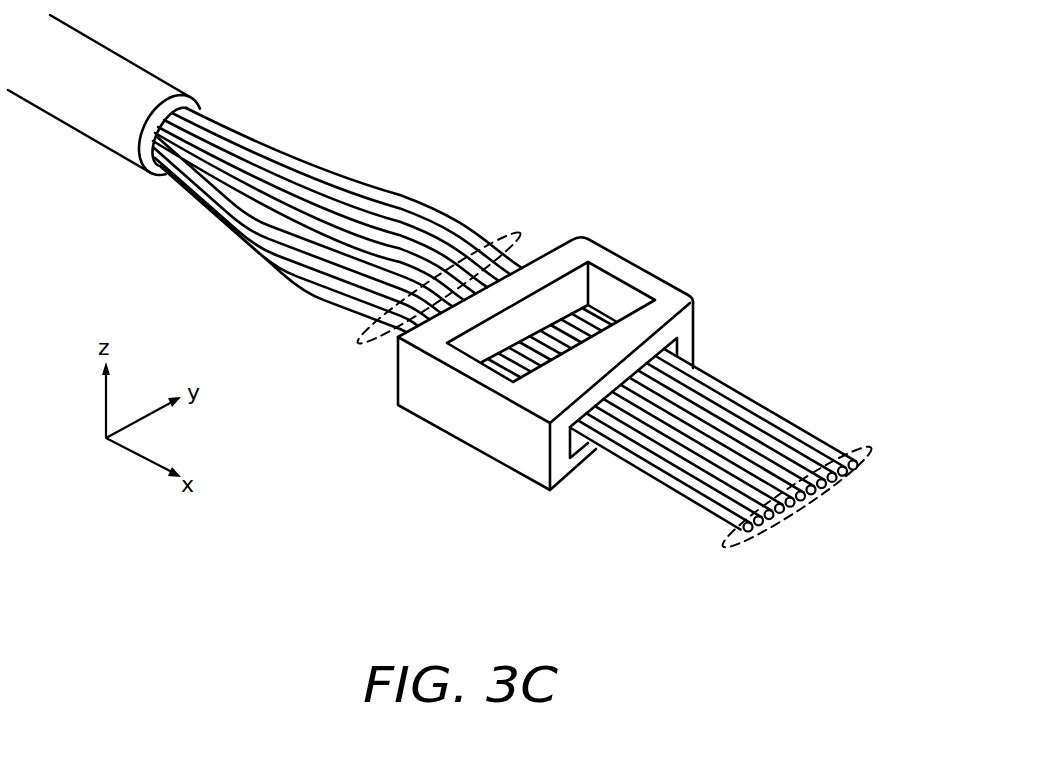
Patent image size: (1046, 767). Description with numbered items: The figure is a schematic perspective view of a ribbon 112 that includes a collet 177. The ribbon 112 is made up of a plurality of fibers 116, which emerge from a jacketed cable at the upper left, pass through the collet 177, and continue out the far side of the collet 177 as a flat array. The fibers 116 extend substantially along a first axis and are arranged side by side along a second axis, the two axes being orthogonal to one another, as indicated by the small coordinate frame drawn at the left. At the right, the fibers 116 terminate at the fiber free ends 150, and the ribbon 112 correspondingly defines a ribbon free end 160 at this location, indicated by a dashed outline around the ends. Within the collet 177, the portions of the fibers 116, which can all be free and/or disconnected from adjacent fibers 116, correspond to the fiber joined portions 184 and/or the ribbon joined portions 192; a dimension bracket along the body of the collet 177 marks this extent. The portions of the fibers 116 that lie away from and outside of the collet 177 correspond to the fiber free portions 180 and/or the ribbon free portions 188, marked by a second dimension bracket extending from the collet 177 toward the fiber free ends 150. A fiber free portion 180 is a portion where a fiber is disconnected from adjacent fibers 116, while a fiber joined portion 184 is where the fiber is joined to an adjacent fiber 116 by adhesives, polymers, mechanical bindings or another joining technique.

The ribbon 112 is at (592, 105).
The fibers 116 is at (508, 230).
The collet 177 is at (670, 303).
The fiber free end 150 is at (742, 452).
The ribbon free end 160 is at (862, 447).
The fiber joined portion 184 is at (453, 476).
The ribbon joined portion 192 is at (538, 507).
The fiber free portion 180 is at (597, 560).
The ribbon free portion 188 is at (687, 593).